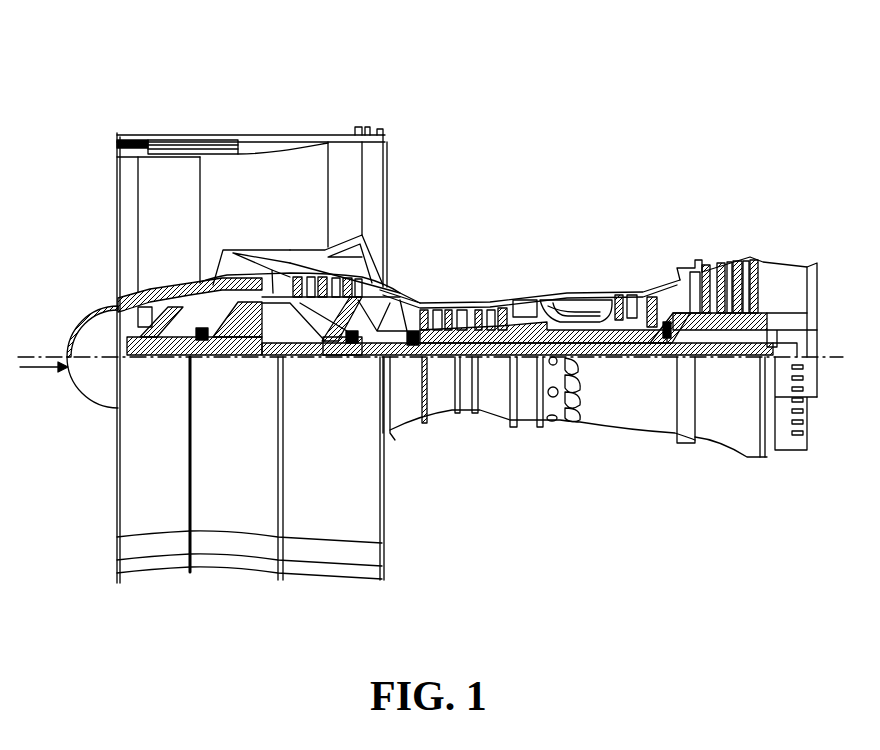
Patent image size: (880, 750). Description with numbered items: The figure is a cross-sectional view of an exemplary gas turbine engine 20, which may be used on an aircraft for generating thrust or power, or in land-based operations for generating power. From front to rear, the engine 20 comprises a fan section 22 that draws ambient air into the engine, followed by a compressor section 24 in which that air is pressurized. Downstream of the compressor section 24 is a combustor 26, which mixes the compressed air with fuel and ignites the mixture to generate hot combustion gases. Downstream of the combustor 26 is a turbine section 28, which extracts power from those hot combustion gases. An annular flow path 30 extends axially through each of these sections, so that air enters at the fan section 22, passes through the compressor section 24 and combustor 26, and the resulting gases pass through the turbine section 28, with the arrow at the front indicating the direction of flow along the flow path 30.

The gas turbine engine 20 is at (636, 164).
The fan section 22 is at (253, 125).
The compressor section 24 is at (420, 283).
The combustor 26 is at (585, 279).
The turbine section 28 is at (710, 241).
The annular flow path 30 is at (32, 368).